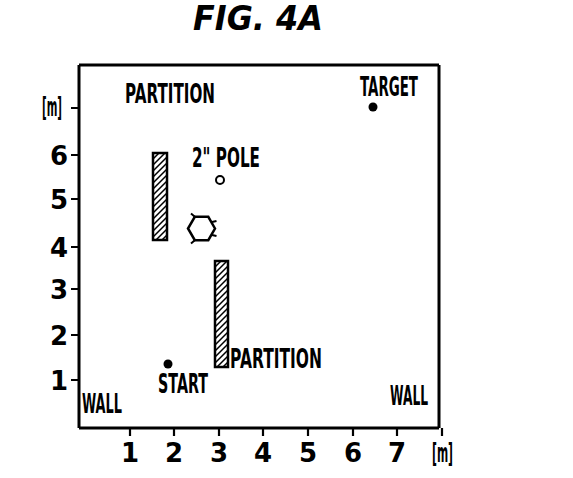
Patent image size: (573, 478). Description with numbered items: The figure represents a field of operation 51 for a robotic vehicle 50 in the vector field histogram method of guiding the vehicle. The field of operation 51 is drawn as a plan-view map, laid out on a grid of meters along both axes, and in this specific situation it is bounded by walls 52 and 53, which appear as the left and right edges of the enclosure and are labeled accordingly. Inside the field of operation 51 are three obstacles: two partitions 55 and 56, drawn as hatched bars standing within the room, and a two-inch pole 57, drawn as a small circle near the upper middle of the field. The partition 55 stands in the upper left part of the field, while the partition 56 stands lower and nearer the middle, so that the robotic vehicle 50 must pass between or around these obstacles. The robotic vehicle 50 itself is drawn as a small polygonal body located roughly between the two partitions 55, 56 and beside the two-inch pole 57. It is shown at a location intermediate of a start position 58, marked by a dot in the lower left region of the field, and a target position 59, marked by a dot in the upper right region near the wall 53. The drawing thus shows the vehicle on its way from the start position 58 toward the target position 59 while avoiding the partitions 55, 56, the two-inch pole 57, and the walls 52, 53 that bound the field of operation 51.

The robotic vehicle 50 is at (215, 229).
The field of operation 51 is at (415, 218).
The wall 52 is at (80, 352).
The wall 53 is at (438, 345).
The partition 55 is at (153, 190).
The partition 56 is at (228, 318).
The two-inch pole 57 is at (224, 182).
The start position 58 is at (168, 364).
The target position 59 is at (373, 107).